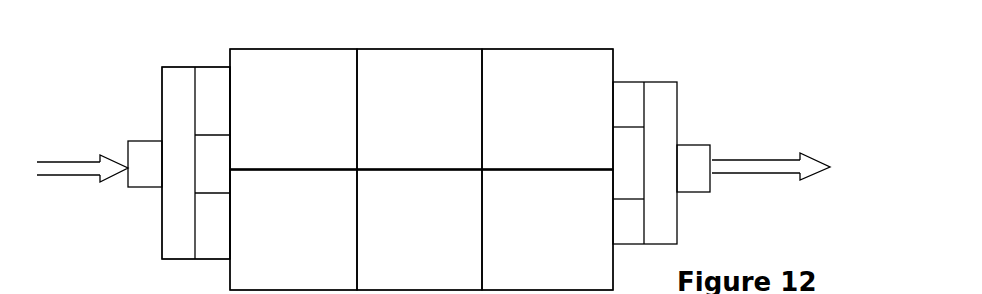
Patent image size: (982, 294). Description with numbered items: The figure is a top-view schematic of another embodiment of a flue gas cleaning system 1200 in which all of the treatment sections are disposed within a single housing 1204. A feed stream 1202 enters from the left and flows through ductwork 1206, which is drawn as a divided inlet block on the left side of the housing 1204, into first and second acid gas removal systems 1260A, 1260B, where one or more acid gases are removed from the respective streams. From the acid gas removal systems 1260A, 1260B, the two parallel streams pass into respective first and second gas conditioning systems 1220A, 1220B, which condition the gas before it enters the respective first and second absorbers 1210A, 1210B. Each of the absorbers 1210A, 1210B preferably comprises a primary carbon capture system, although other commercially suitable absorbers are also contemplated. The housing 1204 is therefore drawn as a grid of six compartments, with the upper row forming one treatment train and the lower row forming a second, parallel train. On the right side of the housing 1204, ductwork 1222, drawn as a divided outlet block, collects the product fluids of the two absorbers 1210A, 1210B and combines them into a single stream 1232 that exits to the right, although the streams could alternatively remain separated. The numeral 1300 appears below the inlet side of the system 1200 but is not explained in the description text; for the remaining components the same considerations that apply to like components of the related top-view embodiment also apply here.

The flue gas cleaning system 1200 is at (188, 30).
The feed stream 1202 is at (99, 158).
The housing 1204 is at (494, 40).
The ductwork 1206 is at (162, 107).
The first absorber 1210A is at (547, 109).
The second absorber 1210B is at (547, 230).
The first gas conditioning system 1220A is at (419, 109).
The second gas conditioning system 1220B is at (419, 230).
The ductwork 1222 is at (680, 97).
The single stream 1232 is at (753, 158).
The first acid gas removal system 1260A is at (293, 109).
The second acid gas removal system 1260B is at (293, 230).
The input assembly 1300 is at (149, 180).